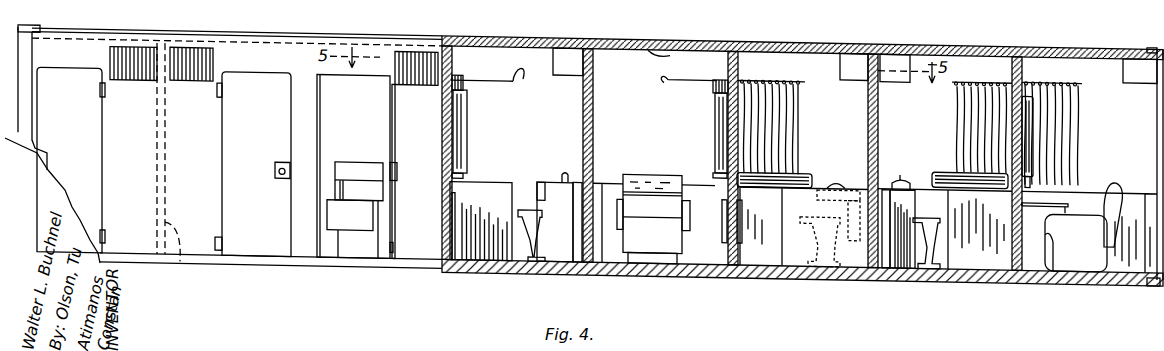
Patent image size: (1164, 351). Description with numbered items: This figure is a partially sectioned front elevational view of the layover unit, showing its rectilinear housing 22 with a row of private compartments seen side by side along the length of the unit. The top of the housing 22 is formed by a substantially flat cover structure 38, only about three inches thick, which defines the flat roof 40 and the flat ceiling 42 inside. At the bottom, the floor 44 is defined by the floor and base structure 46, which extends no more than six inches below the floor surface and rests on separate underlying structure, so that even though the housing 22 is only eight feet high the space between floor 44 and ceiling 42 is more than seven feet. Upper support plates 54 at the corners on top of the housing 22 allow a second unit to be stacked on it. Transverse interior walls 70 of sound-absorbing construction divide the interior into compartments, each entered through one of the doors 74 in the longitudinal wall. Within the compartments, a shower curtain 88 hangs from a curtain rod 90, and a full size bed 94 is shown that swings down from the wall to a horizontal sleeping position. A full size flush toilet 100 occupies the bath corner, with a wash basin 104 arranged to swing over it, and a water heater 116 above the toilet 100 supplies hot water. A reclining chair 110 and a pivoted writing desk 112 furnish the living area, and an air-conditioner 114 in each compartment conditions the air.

The housing 22 is at (590, 158).
The cover structure 38 is at (503, 28).
The roof 40 is at (623, 31).
The ceiling 42 is at (668, 42).
The floor 44 is at (708, 249).
The floor and base structure 46 is at (781, 252).
The upper support plates 54 is at (1153, 23).
The transverse interior walls 70 is at (594, 106).
The doors 74 is at (72, 74).
The shower curtain 88 is at (463, 78).
The curtain rod 90 is at (975, 57).
The bed 94 is at (463, 109).
The flush toilet 100 is at (525, 207).
The wash basin 104 is at (542, 168).
The reclining chair 110 is at (357, 170).
The writing desk 112 is at (721, 213).
The air-conditioner 114 is at (182, 44).
The water heaters 116 is at (566, 49).